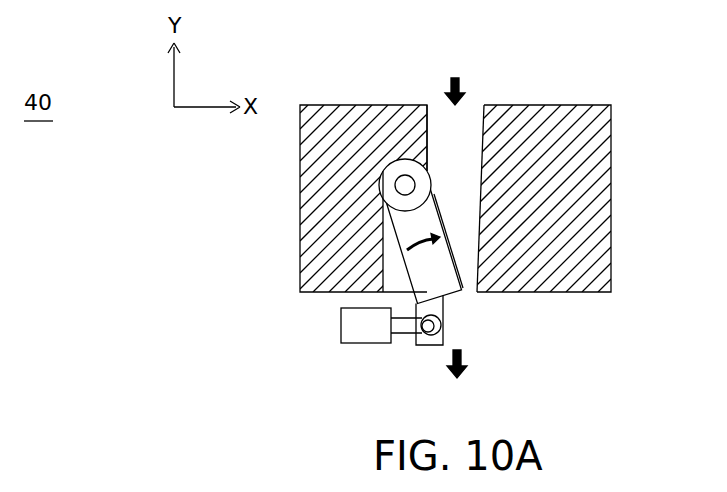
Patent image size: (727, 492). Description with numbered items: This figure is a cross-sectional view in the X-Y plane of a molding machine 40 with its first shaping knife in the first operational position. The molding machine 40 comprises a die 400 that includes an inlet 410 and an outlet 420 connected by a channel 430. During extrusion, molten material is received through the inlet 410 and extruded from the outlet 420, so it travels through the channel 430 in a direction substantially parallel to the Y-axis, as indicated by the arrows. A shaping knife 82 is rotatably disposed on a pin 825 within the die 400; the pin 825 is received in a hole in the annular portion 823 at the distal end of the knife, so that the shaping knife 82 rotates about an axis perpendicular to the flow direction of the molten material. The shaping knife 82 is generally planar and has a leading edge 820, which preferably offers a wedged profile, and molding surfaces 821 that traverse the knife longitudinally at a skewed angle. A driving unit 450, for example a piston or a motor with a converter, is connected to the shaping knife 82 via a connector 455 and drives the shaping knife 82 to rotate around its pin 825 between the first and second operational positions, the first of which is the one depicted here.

The molding machine 40 is at (489, 184).
The die 400 is at (596, 195).
The inlet 410 is at (436, 103).
The outlet 420 is at (463, 293).
The channel 430 is at (467, 180).
The driving unit 450 is at (341, 327).
The connector 455 is at (430, 347).
The shaping knife 82 is at (392, 259).
The leading edge 820 is at (442, 172).
The molding surfaces 821 is at (462, 284).
The annular portion 823 is at (387, 173).
The pin 825 is at (403, 188).